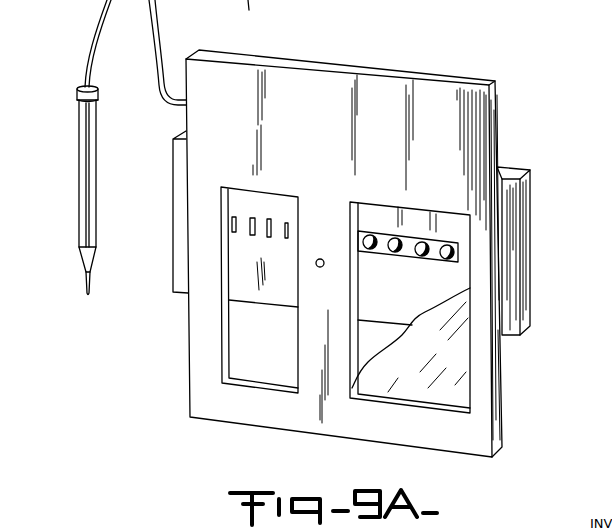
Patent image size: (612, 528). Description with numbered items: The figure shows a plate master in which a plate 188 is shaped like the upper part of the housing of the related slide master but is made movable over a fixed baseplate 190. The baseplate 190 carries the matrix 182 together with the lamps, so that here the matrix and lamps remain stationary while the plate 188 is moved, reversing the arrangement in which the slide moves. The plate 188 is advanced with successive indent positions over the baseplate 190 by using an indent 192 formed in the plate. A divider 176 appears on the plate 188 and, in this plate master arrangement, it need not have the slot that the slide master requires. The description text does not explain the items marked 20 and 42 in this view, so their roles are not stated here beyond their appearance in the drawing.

The pen / stylus 20 is at (80, 174).
The record paper 42 is at (425, 396).
The divider 176 is at (340, 295).
The matrix 182 is at (268, 237).
The plate 188 is at (347, 253).
The baseplate 190 is at (513, 253).
The indent 192 is at (333, 247).